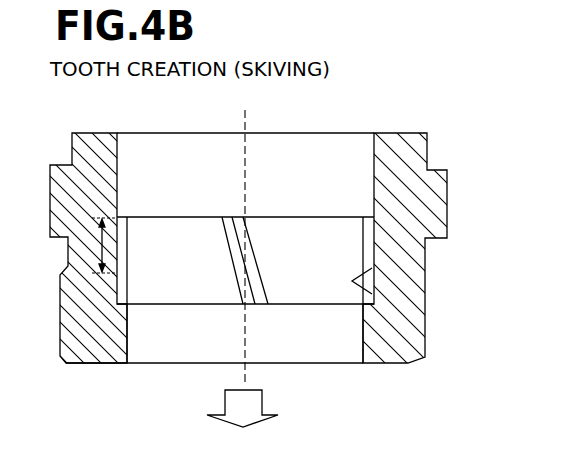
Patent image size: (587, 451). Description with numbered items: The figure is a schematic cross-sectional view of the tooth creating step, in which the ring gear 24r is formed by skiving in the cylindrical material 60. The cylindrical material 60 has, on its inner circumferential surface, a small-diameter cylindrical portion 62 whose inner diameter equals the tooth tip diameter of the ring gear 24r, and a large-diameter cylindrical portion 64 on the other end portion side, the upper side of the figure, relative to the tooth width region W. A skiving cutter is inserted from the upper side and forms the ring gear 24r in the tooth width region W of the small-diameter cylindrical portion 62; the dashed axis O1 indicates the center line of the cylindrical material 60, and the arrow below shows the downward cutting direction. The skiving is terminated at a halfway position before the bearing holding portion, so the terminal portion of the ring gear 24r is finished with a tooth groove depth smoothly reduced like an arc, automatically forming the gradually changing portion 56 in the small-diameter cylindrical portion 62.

The cylindrical material 60 is at (411, 118).
The small-diameter cylindrical portion 62 is at (355, 247).
The gradually changing portion 56 is at (373, 267).
The large-diameter cylindrical portion 64 is at (118, 155).
The rotation axis of workpiece O1 is at (247, 237).
The ring gear 24r is at (289, 312).
The tooth width region W is at (98, 245).